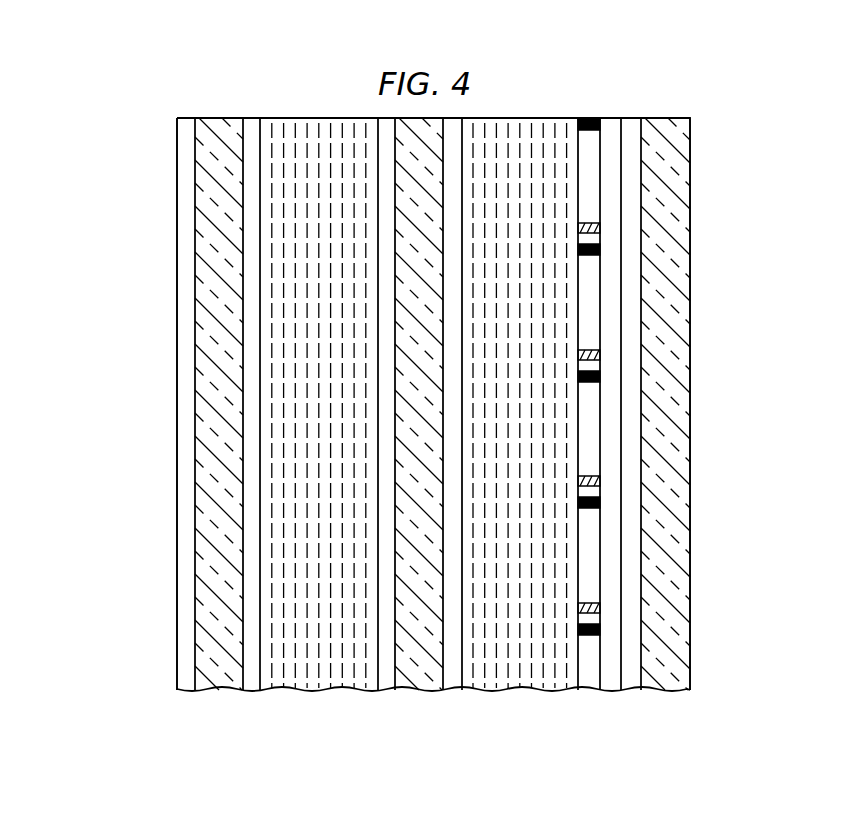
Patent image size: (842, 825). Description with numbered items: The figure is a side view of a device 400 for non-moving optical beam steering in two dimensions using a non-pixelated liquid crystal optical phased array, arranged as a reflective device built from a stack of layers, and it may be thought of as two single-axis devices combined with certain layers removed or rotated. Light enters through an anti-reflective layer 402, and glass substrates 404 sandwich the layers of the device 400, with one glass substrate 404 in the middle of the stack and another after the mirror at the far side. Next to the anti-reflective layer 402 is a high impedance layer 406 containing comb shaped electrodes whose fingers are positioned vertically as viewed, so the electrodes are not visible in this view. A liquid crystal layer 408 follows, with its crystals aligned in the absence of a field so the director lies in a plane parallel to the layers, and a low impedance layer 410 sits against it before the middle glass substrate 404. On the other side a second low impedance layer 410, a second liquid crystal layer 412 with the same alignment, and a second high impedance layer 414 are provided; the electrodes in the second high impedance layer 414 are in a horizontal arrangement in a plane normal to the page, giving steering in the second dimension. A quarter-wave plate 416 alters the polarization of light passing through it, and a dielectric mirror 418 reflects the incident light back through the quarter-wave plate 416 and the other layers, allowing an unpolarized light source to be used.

The device 400 is at (113, 243).
The anti-reflective layer 402 is at (185, 118).
The glass substrate 404 is at (218, 691).
The high impedance layer 406 is at (252, 118).
The liquid crystal layer 408 is at (312, 691).
The low impedance layer 410 is at (385, 691).
The second liquid crystal layer 412 is at (548, 118).
The second high impedance layer 414 is at (588, 691).
The quarter-wave plate 416 is at (612, 691).
The dielectric mirror 418 is at (631, 118).